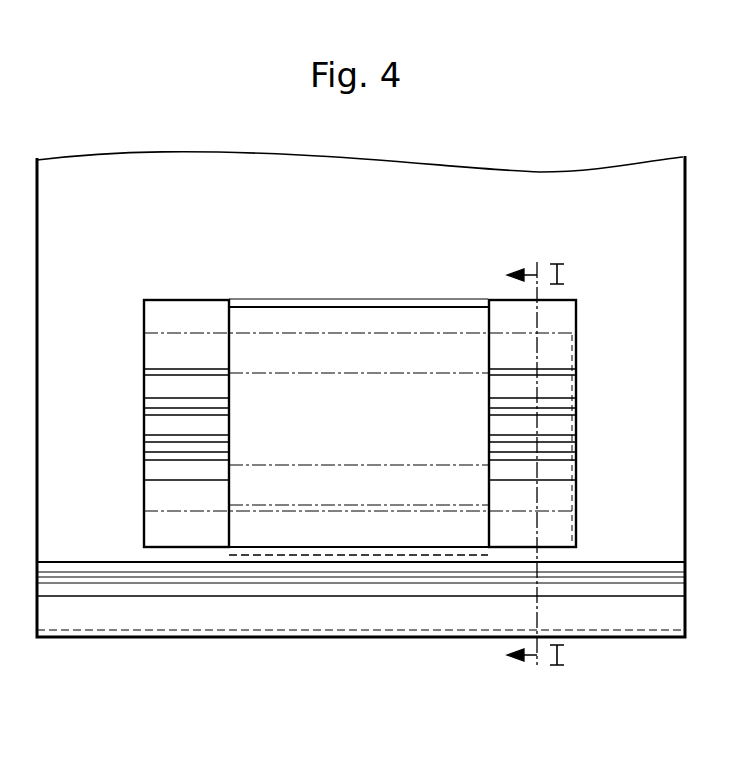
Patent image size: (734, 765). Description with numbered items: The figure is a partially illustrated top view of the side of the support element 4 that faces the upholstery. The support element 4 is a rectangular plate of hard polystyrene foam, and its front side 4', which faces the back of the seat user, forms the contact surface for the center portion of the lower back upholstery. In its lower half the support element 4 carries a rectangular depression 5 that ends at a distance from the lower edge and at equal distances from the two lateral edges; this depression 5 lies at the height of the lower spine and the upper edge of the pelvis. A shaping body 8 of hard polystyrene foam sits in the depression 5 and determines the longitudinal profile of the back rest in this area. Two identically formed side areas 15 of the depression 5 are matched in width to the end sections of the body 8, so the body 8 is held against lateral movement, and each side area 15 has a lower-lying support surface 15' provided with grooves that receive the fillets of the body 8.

The support element 4 is at (361, 381).
The front side 4' is at (67, 250).
The rectangular depression 5 is at (297, 326).
The shaping body 8 is at (380, 330).
The side areas 15 is at (359, 394).
The support surface 15' is at (360, 383).